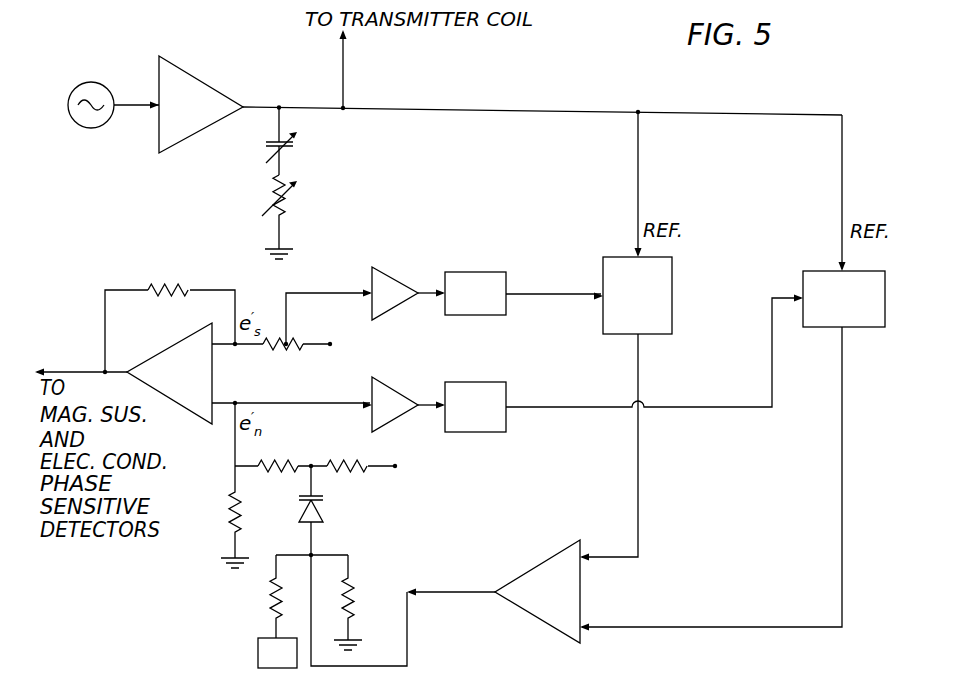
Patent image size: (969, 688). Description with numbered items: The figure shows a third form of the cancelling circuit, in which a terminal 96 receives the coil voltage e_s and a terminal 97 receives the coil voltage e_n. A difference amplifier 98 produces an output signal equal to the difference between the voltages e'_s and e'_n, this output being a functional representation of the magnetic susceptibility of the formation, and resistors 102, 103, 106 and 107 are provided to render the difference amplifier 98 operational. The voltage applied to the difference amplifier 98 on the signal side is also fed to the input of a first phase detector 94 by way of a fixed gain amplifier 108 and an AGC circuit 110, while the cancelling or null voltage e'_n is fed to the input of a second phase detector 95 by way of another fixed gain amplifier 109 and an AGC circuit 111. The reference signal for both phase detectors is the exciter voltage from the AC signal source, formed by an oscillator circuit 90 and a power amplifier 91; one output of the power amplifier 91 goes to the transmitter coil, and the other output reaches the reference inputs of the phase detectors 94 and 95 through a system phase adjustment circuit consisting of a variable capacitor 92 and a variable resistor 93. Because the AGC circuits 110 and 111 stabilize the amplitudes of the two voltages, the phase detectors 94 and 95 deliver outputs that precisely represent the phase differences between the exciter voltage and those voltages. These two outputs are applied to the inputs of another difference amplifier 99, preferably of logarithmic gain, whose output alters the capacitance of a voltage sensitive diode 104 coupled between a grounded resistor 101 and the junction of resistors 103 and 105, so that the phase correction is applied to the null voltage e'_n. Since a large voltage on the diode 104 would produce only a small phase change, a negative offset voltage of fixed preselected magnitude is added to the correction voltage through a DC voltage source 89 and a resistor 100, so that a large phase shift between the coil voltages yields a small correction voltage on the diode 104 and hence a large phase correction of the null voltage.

The DC voltage source 89 is at (257, 657).
The oscillator circuit 90 is at (78, 126).
The power amplifier 91 is at (188, 141).
The variable capacitor 92 is at (296, 150).
The variable resistor 93 is at (299, 193).
The first phase detector 94 is at (672, 301).
The second phase detector 95 is at (868, 328).
The terminal 96 is at (332, 342).
The terminal 97 is at (395, 474).
The difference amplifier 98 is at (157, 350).
The difference amplifier 99 is at (537, 620).
The resistor 100 is at (268, 602).
The grounded resistor 101 is at (357, 583).
The resistor 102 is at (240, 510).
The resistor 103 is at (282, 462).
The voltage sensitive diode 104 is at (323, 518).
The resistor 105 is at (348, 463).
The resistor 106 is at (282, 352).
The resistor 107 is at (161, 278).
The fixed gain amplifier 108 is at (385, 272).
The fixed gain amplifier 109 is at (388, 385).
The AGC circuit 110 is at (484, 272).
The AGC circuit 111 is at (487, 380).